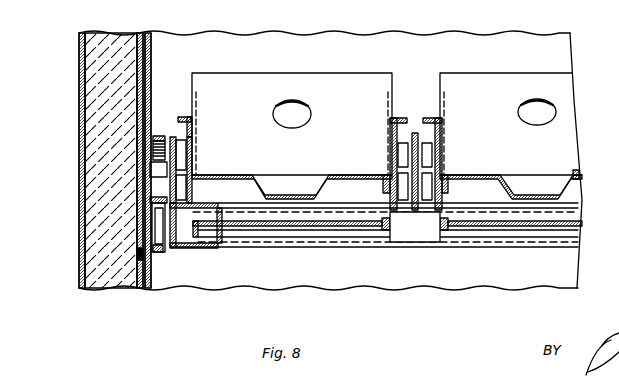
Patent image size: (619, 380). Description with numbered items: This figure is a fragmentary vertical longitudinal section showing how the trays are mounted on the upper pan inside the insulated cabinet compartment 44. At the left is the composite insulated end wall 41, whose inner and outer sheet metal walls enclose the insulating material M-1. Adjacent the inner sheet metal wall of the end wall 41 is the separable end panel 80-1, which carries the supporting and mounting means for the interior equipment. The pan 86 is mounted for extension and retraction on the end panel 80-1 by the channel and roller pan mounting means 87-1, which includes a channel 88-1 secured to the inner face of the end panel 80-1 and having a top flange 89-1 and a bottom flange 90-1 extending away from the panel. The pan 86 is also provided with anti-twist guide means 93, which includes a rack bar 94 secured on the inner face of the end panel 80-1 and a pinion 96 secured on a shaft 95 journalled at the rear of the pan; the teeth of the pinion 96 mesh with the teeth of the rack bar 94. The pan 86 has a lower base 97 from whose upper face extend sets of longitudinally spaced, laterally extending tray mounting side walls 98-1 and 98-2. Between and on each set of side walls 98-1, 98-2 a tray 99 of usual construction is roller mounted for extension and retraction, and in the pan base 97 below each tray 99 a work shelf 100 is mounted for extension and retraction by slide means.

The composite insulated end wall 41 is at (85, 82).
The insulating material M-1 is at (102, 221).
The separable end panel 80-1 is at (151, 53).
The insulated cabinet compartment 44 is at (387, 109).
The tray 99 is at (366, 168).
The tray mounting side wall 98-2 is at (413, 140).
The tray mounting side wall 98-1 is at (174, 139).
The anti-twist guide means 93 is at (162, 130).
The pinion 96 is at (153, 150).
The rack bar 94 is at (150, 171).
The top flange 89-1 is at (150, 200).
The channel 88-1 is at (152, 241).
The bottom flange 90-1 is at (134, 256).
The channel and roller pan mounting means 87-1 is at (173, 260).
The pan 86 is at (516, 258).
The lower base 97 is at (270, 248).
The work shelf 100 is at (348, 226).
The shaft 95 is at (580, 165).